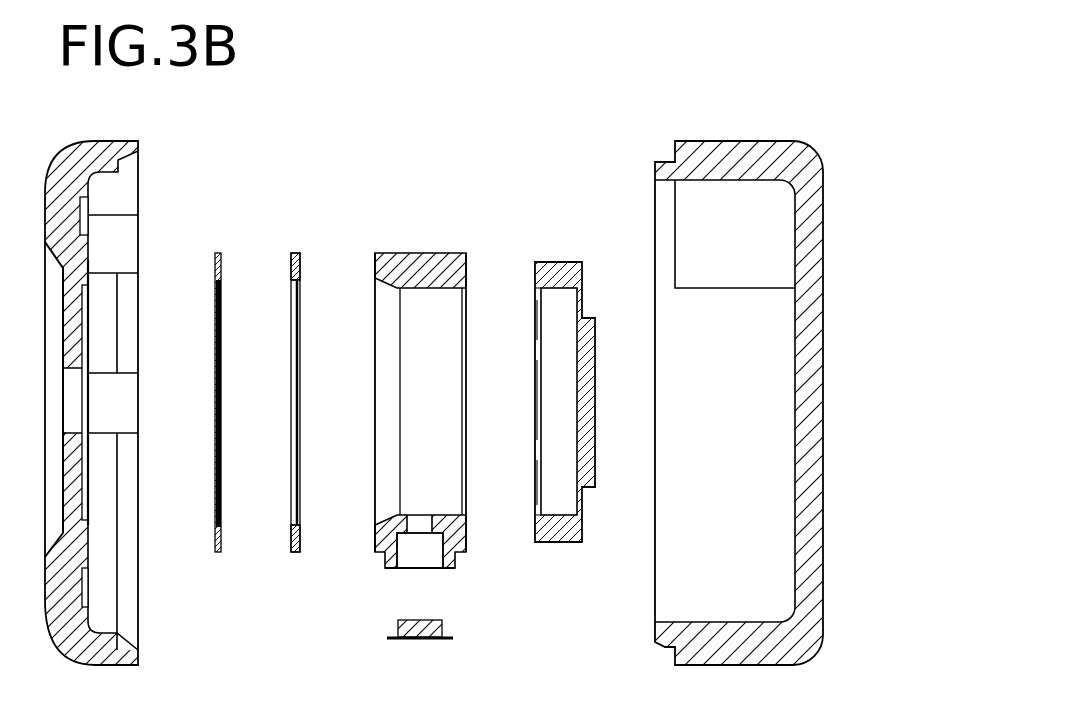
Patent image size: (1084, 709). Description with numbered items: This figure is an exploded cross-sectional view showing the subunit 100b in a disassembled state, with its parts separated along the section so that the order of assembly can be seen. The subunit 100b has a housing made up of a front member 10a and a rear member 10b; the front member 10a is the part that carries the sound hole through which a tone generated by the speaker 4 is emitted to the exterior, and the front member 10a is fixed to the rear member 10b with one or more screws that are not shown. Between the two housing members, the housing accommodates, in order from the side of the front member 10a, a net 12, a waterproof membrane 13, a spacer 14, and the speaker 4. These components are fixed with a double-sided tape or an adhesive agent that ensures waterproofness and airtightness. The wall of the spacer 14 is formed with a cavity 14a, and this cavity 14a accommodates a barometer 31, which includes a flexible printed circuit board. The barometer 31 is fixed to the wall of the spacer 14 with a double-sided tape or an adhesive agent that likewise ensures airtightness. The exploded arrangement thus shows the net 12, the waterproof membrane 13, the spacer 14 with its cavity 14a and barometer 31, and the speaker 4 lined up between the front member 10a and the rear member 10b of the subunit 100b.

The subunit 100b is at (866, 96).
The front member 10a is at (127, 141).
The rear member 10b is at (762, 148).
The net 12 is at (217, 253).
The waterproof membrane 13 is at (296, 253).
The spacer 14 is at (425, 253).
The cavity 14a is at (416, 545).
The speaker 4 is at (548, 262).
The barometer 31 is at (443, 627).